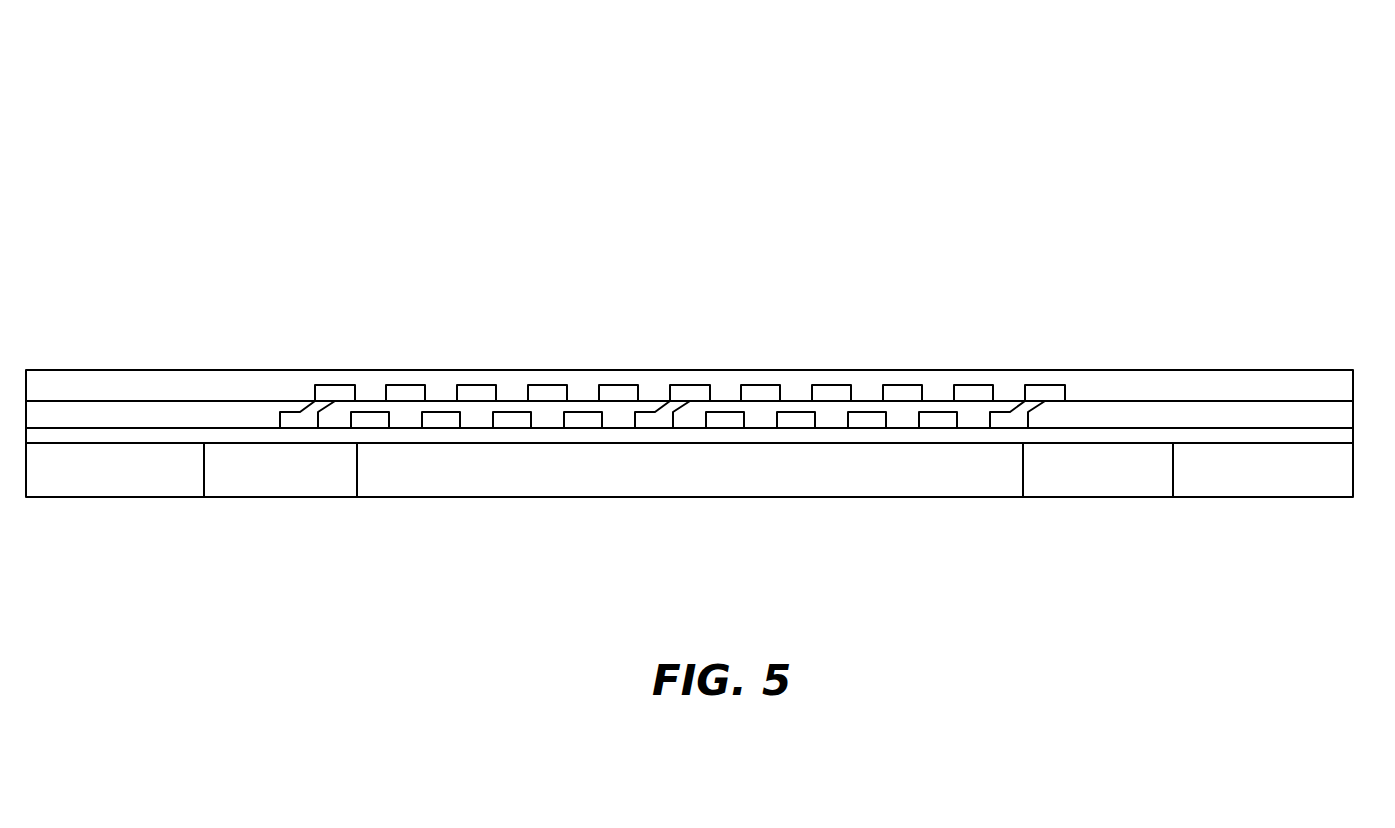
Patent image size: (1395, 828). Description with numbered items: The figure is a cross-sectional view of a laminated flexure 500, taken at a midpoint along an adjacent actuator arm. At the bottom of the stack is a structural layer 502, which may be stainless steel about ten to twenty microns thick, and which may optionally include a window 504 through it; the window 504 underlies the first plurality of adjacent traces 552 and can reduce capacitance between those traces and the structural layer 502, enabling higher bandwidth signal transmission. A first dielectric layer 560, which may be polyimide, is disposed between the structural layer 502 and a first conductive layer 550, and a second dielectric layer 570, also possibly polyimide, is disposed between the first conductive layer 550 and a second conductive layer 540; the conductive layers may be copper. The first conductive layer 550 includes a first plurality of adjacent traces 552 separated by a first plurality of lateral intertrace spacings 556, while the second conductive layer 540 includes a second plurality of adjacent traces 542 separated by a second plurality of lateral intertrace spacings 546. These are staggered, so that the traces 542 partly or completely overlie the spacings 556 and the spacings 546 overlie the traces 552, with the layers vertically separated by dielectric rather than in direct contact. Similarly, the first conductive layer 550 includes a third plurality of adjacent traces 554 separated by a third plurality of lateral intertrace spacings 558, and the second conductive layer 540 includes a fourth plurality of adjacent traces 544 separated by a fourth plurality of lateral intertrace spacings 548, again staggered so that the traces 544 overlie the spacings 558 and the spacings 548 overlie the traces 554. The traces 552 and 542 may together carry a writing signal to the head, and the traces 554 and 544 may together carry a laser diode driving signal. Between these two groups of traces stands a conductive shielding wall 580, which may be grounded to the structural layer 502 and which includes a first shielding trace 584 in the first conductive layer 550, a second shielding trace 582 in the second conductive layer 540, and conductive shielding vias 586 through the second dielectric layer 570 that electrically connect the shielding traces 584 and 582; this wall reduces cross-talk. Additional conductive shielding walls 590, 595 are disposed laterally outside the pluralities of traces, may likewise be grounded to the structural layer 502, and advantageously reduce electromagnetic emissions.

The laminated flexure 500 is at (217, 135).
The structural layer 502 is at (93, 473).
The window 504 is at (958, 472).
The second conductive layer 540 is at (1086, 389).
The second plurality of adjacent traces 542 is at (761, 385).
The fourth plurality of adjacent traces 544 is at (406, 385).
The second plurality of lateral intertrace spacings 546 is at (796, 392).
The fourth plurality of lateral intertrace spacings 548 is at (441, 392).
The first conductive layer 550 is at (1055, 418).
The first plurality of adjacent traces 552 is at (725, 420).
The third plurality of adjacent traces 554 is at (369, 420).
The first plurality of lateral intertrace spacings 556 is at (761, 420).
The third plurality of lateral intertrace spacings 558 is at (334, 420).
The first dielectric layer 560 is at (980, 433).
The second dielectric layer 570 is at (723, 403).
The conductive shielding wall 580 is at (678, 385).
The second shielding trace 582 is at (694, 393).
The first shielding trace 584 is at (643, 420).
The conductive shielding vias 586 is at (672, 405).
The additional conductive shielding wall 590 is at (335, 385).
The additional conductive shielding wall 595 is at (1050, 385).